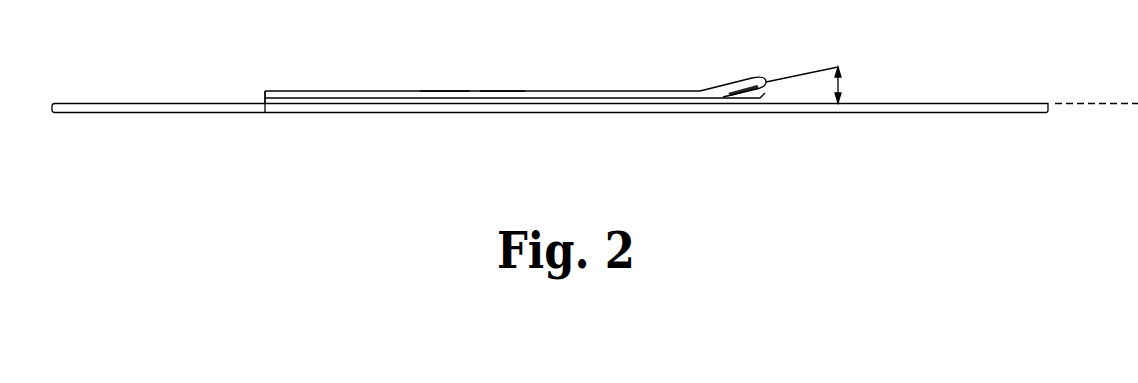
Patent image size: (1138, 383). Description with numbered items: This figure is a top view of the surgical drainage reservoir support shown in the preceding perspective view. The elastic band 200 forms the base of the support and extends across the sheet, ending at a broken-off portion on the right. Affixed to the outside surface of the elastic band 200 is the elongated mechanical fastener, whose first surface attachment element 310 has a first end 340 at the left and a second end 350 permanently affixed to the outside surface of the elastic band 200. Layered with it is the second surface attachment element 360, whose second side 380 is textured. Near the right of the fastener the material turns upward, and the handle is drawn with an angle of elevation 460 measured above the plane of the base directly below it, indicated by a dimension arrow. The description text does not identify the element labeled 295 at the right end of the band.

The elastic band 200 is at (203, 103).
The first surface attachment element 310 is at (358, 91).
The second surface attachment element 360 is at (445, 91).
The second side 380 is at (500, 91).
The second end 350 is at (648, 91).
The first end 340 is at (265, 112).
The angle of elevation 460 is at (840, 88).
The centerline / extension 295 is at (1095, 103).